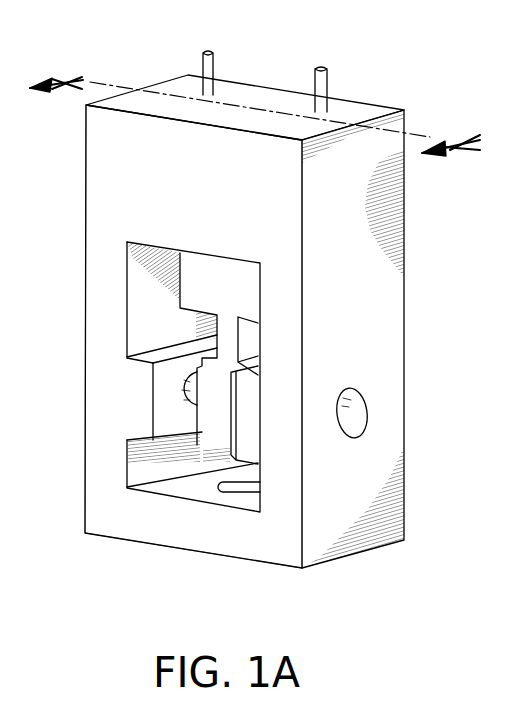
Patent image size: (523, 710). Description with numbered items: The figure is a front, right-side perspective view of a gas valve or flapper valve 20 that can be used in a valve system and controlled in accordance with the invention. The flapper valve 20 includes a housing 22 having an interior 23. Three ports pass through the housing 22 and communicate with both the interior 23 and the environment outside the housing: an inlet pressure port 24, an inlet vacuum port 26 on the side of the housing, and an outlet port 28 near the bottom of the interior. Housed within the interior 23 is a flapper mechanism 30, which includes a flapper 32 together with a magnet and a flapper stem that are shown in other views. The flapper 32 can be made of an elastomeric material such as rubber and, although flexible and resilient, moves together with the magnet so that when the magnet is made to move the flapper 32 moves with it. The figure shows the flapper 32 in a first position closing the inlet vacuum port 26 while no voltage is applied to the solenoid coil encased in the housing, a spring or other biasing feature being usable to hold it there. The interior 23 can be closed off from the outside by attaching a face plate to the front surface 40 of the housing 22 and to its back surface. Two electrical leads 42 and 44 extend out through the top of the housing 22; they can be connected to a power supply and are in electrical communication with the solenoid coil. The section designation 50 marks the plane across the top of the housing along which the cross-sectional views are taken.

The flapper valve 20 is at (416, 72).
The housing 22 is at (404, 197).
The interior 23 is at (143, 278).
The inlet pressure port 24 is at (193, 400).
The inlet vacuum port 26 is at (360, 408).
The outlet port 28 is at (228, 483).
The flapper mechanism 30 is at (237, 293).
The flapper 32 is at (212, 452).
The front surface 40 is at (287, 343).
The electrical lead 42 is at (328, 83).
The electrical lead 44 is at (215, 69).
The section line 50 is at (274, 97).